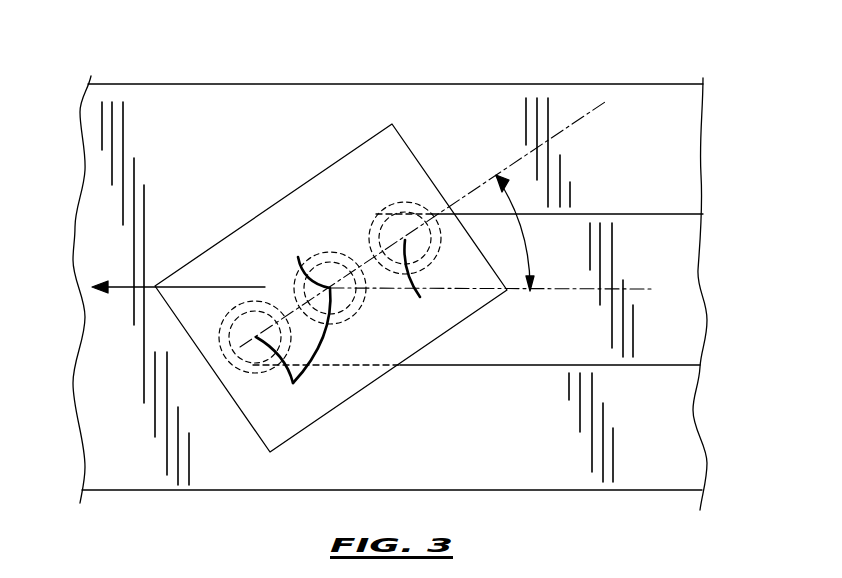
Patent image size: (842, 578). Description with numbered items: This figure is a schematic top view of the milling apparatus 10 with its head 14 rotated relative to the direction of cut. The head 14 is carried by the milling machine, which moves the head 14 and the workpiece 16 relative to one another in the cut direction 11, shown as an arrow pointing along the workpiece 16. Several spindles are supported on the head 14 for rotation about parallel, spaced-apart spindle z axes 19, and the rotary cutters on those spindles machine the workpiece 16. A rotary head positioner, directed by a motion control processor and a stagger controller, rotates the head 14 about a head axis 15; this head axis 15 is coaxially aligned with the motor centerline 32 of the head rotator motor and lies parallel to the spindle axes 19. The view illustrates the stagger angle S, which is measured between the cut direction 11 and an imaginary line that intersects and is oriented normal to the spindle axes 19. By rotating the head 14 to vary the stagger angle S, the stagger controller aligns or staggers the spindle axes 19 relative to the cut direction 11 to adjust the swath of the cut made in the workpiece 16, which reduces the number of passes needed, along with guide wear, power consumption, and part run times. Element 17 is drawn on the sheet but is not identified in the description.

The milling apparatus 10 is at (490, 70).
The cut direction 11 is at (188, 288).
The head 14 is at (396, 138).
The head axis 15 is at (288, 307).
The motor centerline 32 is at (436, 237).
The spindle z axes 19 is at (349, 326).
The workpiece 16 is at (677, 447).
The fold line 17 is at (667, 398).
The stagger angle S is at (521, 225).